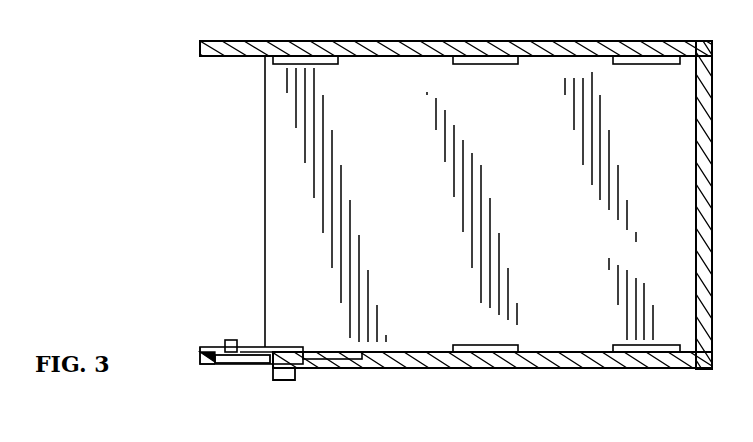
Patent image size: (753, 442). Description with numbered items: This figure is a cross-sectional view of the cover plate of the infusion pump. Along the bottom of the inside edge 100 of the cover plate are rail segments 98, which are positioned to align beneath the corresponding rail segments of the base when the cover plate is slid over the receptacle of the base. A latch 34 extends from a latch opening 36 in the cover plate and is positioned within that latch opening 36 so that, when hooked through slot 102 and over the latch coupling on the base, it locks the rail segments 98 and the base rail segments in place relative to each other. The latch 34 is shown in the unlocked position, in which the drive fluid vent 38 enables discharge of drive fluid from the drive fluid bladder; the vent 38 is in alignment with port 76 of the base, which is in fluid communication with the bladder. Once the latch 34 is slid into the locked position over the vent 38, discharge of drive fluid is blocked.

The port 76 is at (451, 192).
The rail segments 98 is at (504, 55).
The inside edge 100 is at (383, 55).
The latch opening 36 is at (250, 366).
The drive fluid vent 38 is at (228, 344).
The slot 102 is at (203, 365).
The latch 34 is at (287, 378).